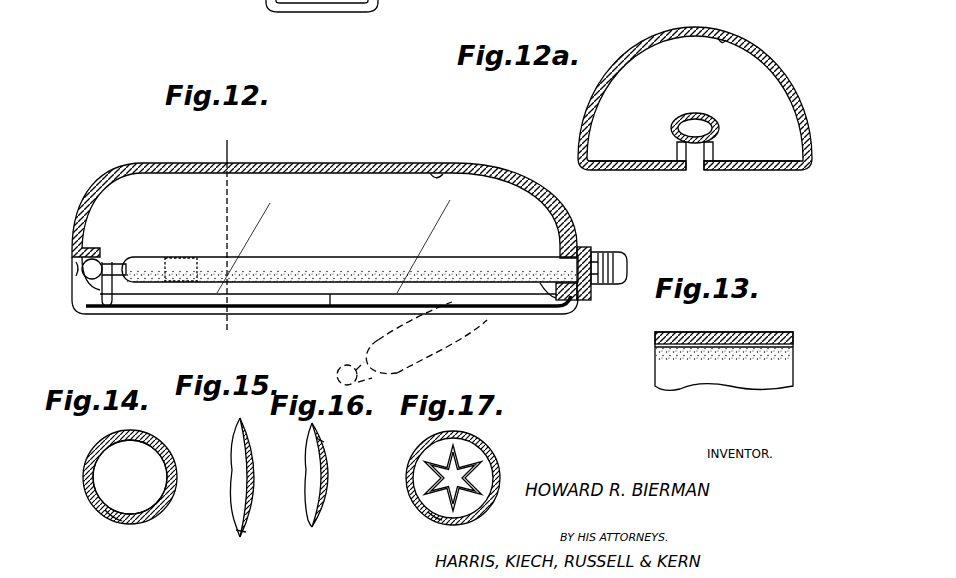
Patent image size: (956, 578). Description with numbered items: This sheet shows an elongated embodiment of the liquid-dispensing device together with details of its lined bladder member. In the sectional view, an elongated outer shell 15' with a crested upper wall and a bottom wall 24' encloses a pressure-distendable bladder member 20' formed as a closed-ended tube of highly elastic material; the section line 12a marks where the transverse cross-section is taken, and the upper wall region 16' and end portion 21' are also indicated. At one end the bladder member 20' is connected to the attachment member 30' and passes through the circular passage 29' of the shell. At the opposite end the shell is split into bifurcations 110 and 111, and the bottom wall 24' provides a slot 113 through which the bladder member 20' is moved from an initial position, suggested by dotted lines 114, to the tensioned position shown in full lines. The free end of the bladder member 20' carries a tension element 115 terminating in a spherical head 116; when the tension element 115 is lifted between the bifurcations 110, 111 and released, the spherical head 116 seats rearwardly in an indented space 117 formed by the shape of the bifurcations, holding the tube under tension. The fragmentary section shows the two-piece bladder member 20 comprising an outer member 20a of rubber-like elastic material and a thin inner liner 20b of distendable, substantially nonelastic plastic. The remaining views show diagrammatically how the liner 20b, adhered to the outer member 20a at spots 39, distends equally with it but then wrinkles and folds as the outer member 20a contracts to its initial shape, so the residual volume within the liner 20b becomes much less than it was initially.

In FIG. 12, the section line 12a is at (236, 147).
In FIG. 12, the outer shell 15' is at (325, 220).
In FIG. 12A, the outer shell 15' is at (695, 93).
In FIG. 12, the shell top wall 16' is at (459, 152).
In FIG. 12A, the shell top wall 16' is at (732, 22).
In FIG. 12, the bladder member 20' is at (350, 246).
In FIG. 12A, the bladder member 20' is at (695, 111).
In FIG. 12, the rod end portion 21' is at (545, 312).
In FIG. 12, the bottom wall 24' is at (328, 317).
In FIG. 12A, the bottom wall 24' is at (695, 183).
In FIG. 12, the circular passage 29' is at (592, 289).
In FIG. 12, the attachment member 30' is at (597, 254).
In FIG. 12, the bifurcation 110 is at (103, 296).
In FIG. 12A, the bifurcation 110 is at (714, 150).
In FIG. 12A, the bifurcation 111 is at (678, 148).
In FIG. 12, the slot 113 is at (330, 306).
In FIG. 12A, the slot 113 is at (698, 171).
In FIG. 12, the dotted lines 114 is at (470, 334).
In FIG. 12, the tension element 115 is at (116, 262).
In FIG. 12, the spherical head 116 is at (88, 278).
In FIG. 12, the indented space 117 is at (78, 265).
In FIG. 13, the bladder member 20 is at (695, 361).
In FIG. 13, the outer member 20a is at (790, 333).
In FIG. 14, the outer member 20a is at (88, 479).
In FIG. 15, the outer member 20a is at (256, 518).
In FIG. 16, the outer member 20a is at (331, 498).
In FIG. 17, the outer member 20a is at (412, 489).
In FIG. 13, the inner liner 20b is at (792, 348).
In FIG. 14, the inner liner 20b is at (112, 509).
In FIG. 15, the inner liner 20b is at (240, 521).
In FIG. 16, the inner liner 20b is at (320, 470).
In FIG. 17, the inner liner 20b is at (500, 461).
In FIG. 14, the spots 39 is at (129, 523).
In FIG. 15, the spots 39 is at (245, 533).
In FIG. 16, the spots 39 is at (323, 441).
In FIG. 17, the spots 39 is at (431, 513).